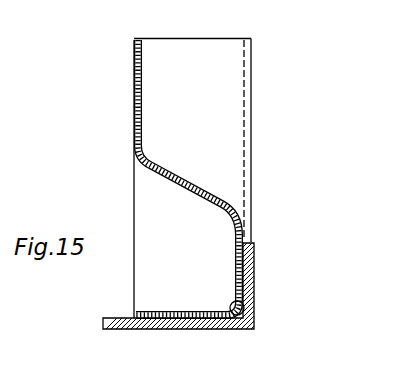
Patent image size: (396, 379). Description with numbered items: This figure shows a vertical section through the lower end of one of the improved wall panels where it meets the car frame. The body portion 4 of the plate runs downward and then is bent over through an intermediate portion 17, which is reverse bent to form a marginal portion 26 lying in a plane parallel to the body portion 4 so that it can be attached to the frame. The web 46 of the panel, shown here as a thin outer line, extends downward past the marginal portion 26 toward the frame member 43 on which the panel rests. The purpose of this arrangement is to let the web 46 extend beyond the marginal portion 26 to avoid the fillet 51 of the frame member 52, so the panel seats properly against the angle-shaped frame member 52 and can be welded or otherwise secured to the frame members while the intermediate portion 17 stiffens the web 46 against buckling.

The body portion 4 is at (143, 106).
The intermediate portion 17 is at (183, 179).
The web 46 is at (152, 271).
The marginal portion 26 is at (237, 268).
The frame member 52 is at (250, 283).
The fillet 51 is at (210, 329).
The frame member 43 is at (148, 329).